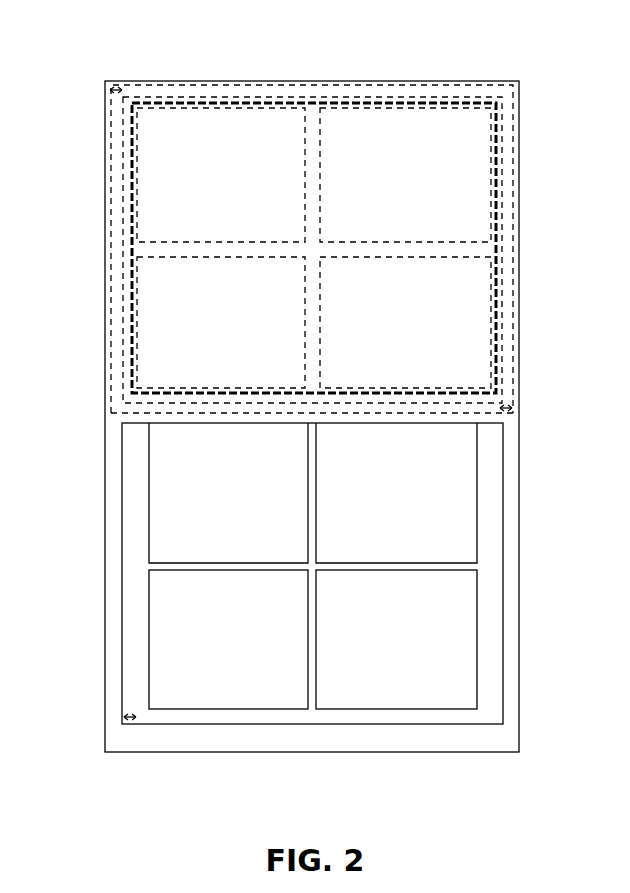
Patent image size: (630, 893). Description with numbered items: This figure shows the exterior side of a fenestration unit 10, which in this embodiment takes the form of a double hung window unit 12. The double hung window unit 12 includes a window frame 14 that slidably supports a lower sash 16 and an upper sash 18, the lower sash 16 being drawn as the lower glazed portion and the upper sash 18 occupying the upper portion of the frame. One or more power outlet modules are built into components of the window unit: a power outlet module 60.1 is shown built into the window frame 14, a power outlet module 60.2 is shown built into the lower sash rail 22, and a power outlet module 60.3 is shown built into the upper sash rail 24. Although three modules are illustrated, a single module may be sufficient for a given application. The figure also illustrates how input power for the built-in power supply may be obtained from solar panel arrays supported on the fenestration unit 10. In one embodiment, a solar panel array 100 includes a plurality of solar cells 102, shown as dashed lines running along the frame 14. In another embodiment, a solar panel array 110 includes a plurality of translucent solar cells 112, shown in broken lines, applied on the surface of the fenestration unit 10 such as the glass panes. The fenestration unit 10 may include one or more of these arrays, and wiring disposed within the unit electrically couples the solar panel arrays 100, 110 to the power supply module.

The fenestration unit 10 is at (279, 452).
The double hung window unit 12 is at (279, 452).
The window frame 14 is at (140, 789).
The lower sash 16 is at (130, 520).
The upper sash 18 is at (112, 405).
The lower sash rail 22 is at (433, 718).
The upper sash rail 24 is at (105, 101).
The power outlet module 60.1 is at (116, 86).
The power outlet module 60.2 is at (124, 715).
The power outlet module 60.3 is at (512, 410).
The solar panel array 100 is at (96, 283).
The solar cell 102 is at (211, 86).
The solar panel array 110 is at (160, 158).
The translucent solar cells 112 is at (239, 189).